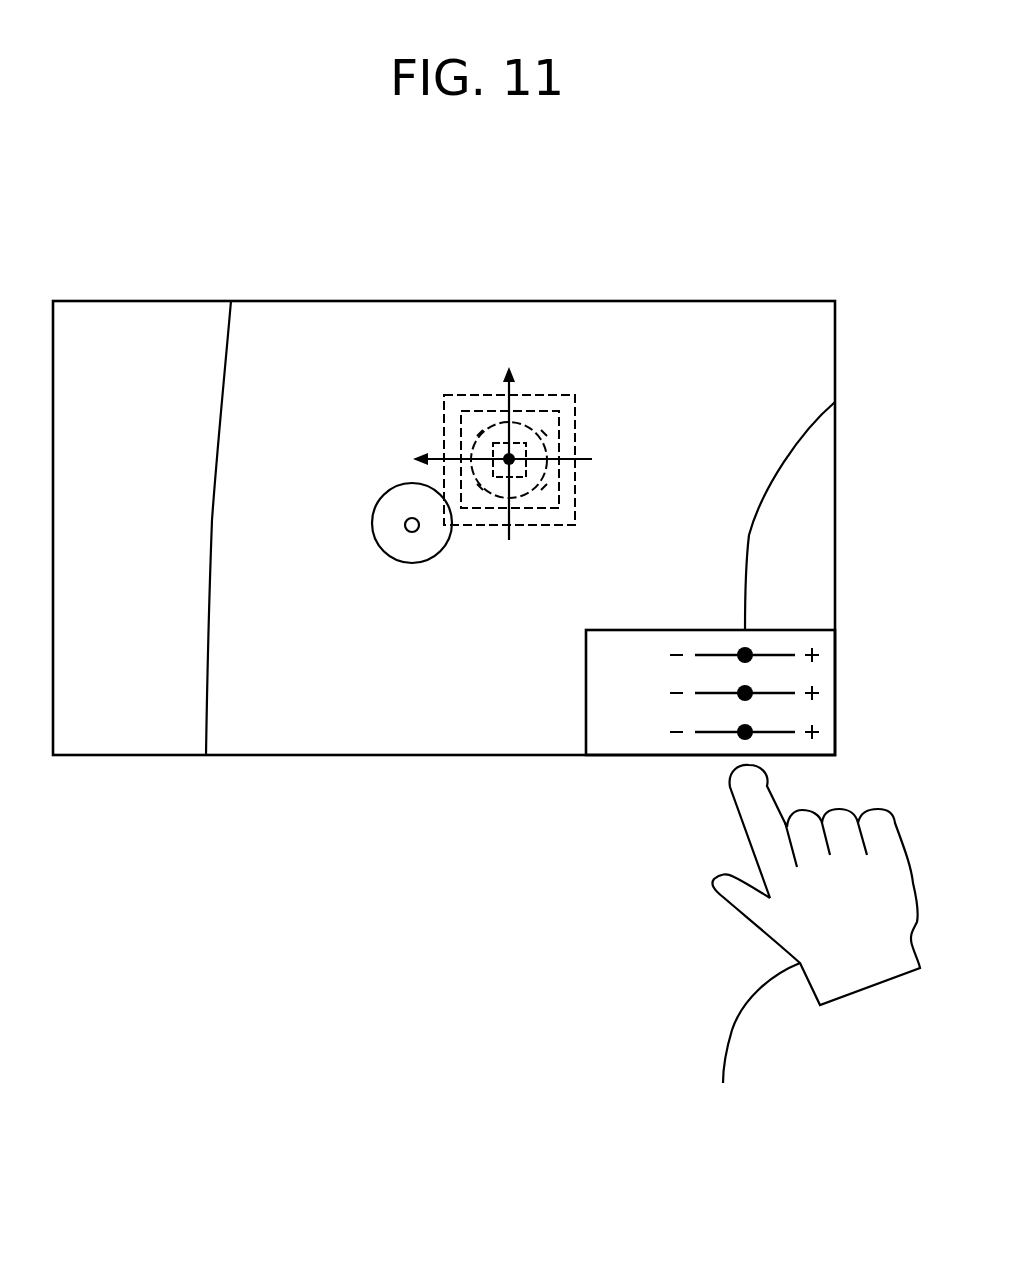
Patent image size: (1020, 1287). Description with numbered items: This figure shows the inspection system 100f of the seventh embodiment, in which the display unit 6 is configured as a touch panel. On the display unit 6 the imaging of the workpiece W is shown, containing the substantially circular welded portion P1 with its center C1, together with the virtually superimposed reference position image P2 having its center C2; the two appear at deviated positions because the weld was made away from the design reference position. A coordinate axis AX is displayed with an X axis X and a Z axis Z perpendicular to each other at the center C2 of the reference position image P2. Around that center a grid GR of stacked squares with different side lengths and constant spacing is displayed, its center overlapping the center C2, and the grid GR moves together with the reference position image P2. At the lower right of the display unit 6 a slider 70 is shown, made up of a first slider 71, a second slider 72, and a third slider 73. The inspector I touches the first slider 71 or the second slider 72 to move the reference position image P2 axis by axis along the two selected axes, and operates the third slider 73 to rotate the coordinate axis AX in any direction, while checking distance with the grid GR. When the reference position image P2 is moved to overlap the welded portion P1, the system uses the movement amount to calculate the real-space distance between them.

The display unit 6 is at (687, 301).
The inspection system 100f is at (824, 276).
The workpiece W is at (225, 383).
The coordinate axis AX is at (486, 361).
The grid GR is at (576, 388).
The reference position image P2 is at (530, 452).
The X axis X is at (512, 462).
The Z axis Z is at (509, 471).
The center C1 is at (404, 522).
The center C2 is at (527, 495).
The welded portion P1 is at (380, 548).
The slider 70 is at (795, 630).
The first slider 71 is at (596, 691).
The second slider 72 is at (596, 730).
The third slider 73 is at (595, 643).
The inspector I is at (816, 941).